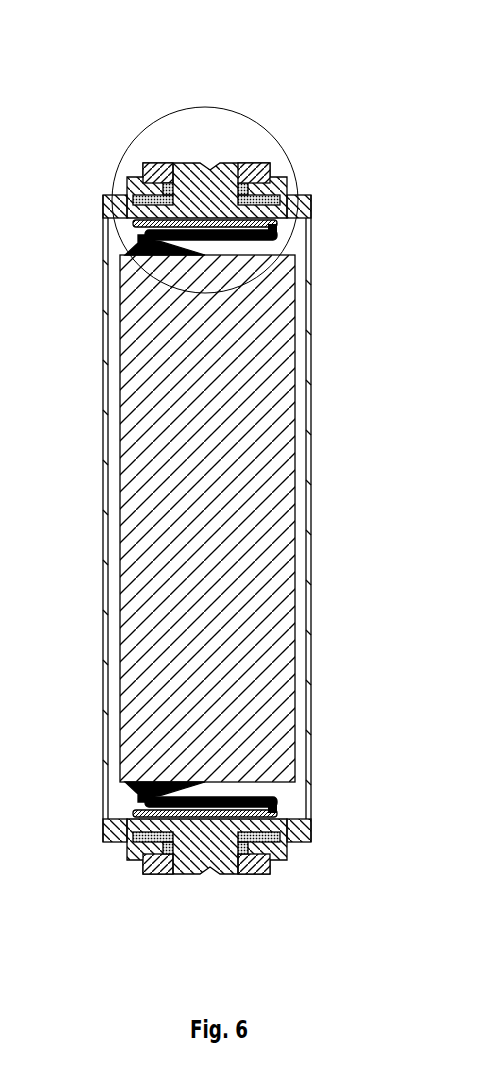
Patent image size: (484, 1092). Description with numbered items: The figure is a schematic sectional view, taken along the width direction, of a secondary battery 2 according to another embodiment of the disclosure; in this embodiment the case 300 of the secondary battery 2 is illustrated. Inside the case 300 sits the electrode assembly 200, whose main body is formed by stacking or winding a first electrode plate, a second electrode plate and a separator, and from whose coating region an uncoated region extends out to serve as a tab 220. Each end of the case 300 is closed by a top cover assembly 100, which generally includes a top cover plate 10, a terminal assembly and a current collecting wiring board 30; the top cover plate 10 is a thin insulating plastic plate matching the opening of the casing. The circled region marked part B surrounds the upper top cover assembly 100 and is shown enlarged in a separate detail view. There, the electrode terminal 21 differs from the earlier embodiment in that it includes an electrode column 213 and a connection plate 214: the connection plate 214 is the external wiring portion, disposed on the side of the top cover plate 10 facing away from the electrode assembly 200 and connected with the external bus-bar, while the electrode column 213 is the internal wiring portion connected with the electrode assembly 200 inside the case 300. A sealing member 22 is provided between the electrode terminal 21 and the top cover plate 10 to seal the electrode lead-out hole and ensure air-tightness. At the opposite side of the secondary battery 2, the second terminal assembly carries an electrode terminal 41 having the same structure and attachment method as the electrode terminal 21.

The secondary battery 2 is at (309, 70).
The electrode terminal 21 is at (260, 65).
The electrode column 213 is at (205, 180).
The connection plate 214 is at (257, 178).
The top cover assembly 100 is at (299, 183).
The top cover plate 10 is at (293, 207).
The sealing member 22 is at (130, 210).
The current collecting wiring board 30 is at (132, 226).
The electrode assembly 200 is at (272, 493).
The case 300 is at (309, 572).
The tab 220 is at (130, 788).
The electrode terminal 41 is at (245, 872).
The part B is at (115, 160).